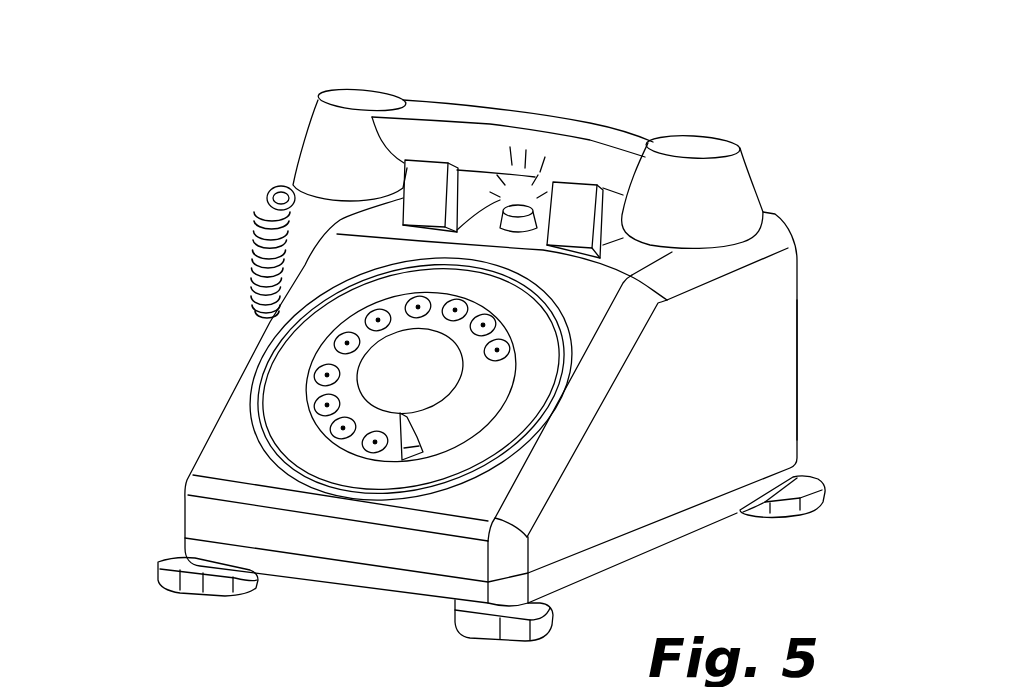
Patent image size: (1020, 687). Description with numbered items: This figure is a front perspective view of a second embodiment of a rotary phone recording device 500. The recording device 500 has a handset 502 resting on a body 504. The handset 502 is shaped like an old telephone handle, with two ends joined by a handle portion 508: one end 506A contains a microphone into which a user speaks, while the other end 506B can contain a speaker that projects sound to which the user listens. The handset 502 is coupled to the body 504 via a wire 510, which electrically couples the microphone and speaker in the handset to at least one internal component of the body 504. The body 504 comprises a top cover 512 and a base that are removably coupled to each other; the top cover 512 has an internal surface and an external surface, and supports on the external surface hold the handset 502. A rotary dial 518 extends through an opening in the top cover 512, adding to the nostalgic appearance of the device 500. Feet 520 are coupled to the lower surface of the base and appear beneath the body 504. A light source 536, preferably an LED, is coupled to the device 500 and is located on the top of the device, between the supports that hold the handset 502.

The recording device 500 is at (753, 68).
The handset 502 is at (437, 88).
The body 504 is at (177, 450).
The end 506A is at (323, 145).
The end 506B is at (720, 193).
The handle portion 508 is at (597, 132).
The wire 510 is at (250, 261).
The top cover 512 is at (735, 362).
The rotary dial 518 is at (473, 399).
The feet 520 is at (182, 585).
The light source 536 is at (523, 208).